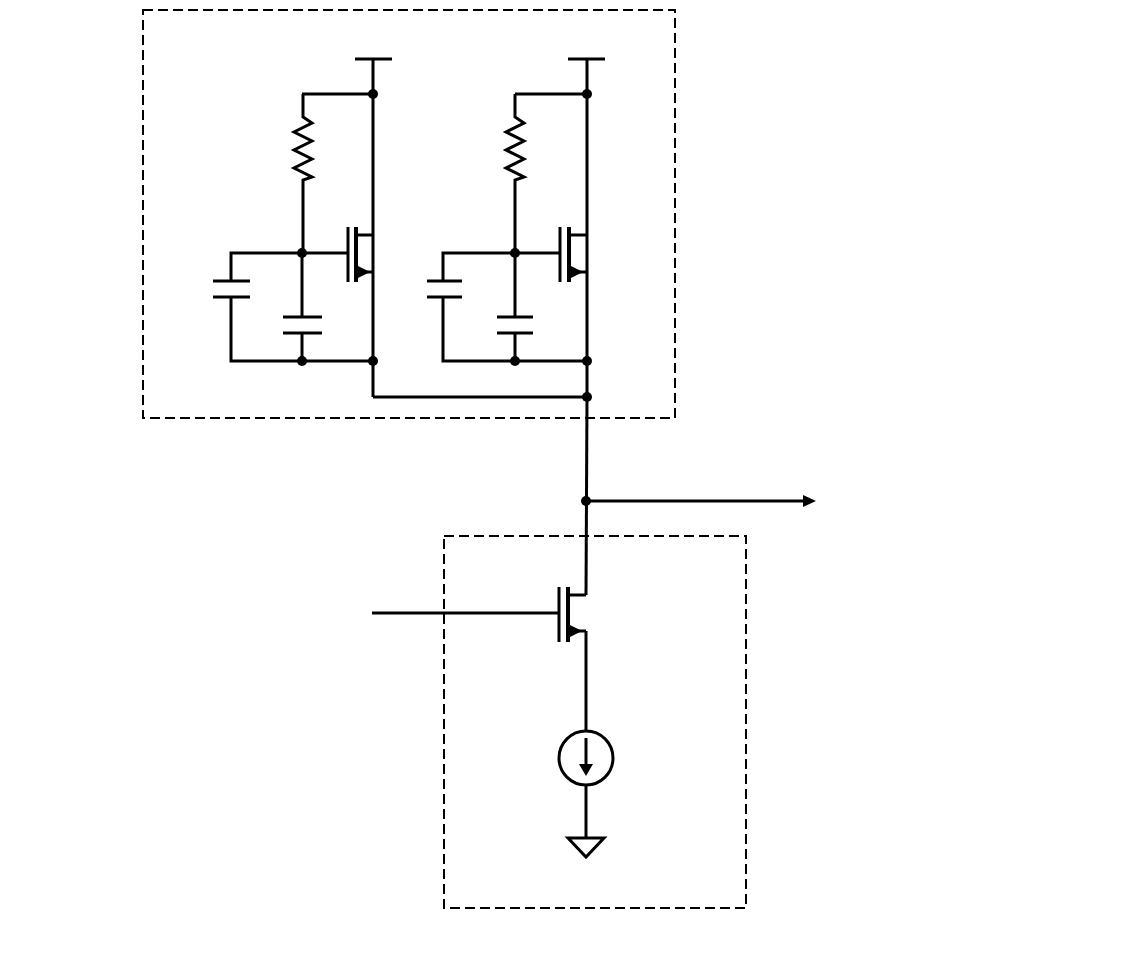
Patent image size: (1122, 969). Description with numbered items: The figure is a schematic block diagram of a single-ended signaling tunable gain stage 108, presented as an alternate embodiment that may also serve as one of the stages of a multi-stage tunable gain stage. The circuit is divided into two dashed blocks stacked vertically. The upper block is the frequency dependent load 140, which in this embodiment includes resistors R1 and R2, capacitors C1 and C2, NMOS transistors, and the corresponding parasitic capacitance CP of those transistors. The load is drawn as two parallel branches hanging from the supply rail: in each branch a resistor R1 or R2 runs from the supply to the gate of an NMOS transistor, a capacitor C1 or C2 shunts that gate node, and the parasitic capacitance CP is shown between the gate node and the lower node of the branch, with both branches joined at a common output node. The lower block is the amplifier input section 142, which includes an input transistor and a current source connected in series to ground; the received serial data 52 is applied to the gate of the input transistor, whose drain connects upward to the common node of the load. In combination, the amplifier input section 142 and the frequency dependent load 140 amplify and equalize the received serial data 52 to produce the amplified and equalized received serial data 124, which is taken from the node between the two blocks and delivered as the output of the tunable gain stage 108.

The tunable gain stage 108 is at (1082, 852).
The frequency dependent load 140 is at (409, 214).
The amplifier input section 142 is at (595, 722).
The amplified and equalized received serial data 124 is at (779, 501).
The received serial data 52 is at (372, 606).
The resistor R1 is at (280, 173).
The resistor R2 is at (493, 173).
The capacitor C1 is at (237, 307).
The capacitor C2 is at (451, 307).
The parasitic capacitance CP is at (319, 307).